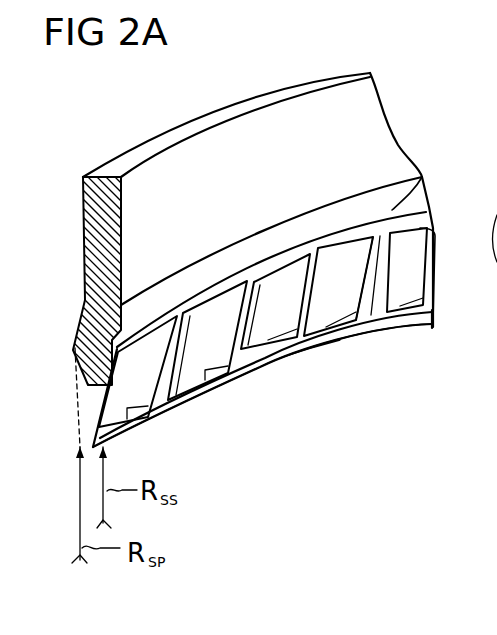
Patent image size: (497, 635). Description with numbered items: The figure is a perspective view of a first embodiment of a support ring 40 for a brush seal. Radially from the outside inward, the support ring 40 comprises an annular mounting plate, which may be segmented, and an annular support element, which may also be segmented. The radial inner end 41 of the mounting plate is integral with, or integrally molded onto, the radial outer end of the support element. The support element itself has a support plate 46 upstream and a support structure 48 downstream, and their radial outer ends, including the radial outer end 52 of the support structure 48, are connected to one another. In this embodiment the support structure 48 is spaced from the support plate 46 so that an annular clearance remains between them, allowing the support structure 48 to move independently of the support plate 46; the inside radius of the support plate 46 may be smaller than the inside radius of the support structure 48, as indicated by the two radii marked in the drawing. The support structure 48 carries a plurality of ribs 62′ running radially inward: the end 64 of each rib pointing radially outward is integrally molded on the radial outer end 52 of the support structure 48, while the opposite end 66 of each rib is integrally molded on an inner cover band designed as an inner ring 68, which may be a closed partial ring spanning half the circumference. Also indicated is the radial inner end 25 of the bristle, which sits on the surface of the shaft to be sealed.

The support ring 40 is at (236, 69).
The radial inner end of the mounting plate 41 is at (143, 312).
The radial outer end of the support structure 52 is at (397, 197).
The support structure 48 is at (455, 208).
The end of the rib 66 is at (378, 322).
The end of the rib 64 is at (356, 320).
The inner ring 68 is at (319, 356).
The rib 62′ is at (173, 373).
The support plate 46 is at (131, 398).
The radial inner end of the bristle 25 is at (496, 442).